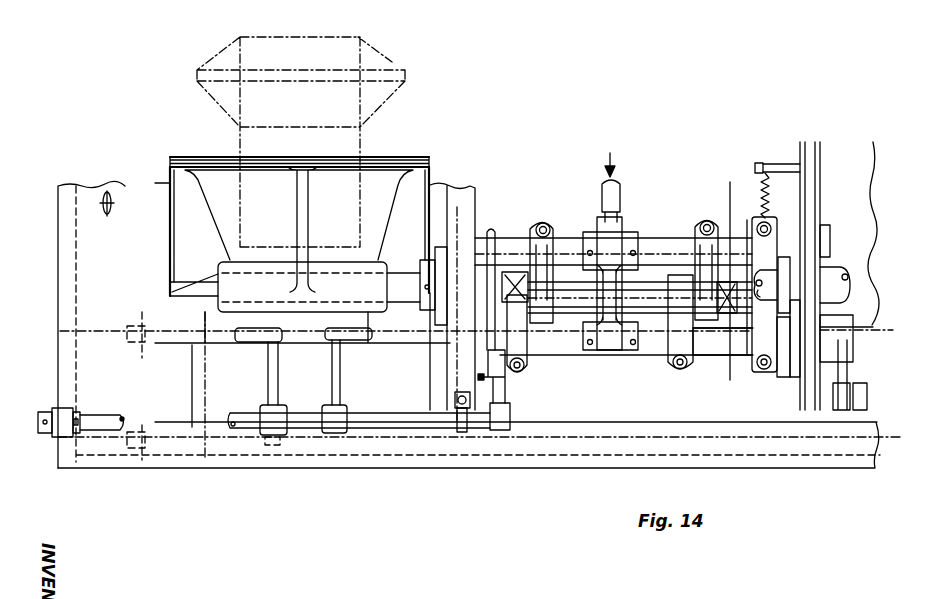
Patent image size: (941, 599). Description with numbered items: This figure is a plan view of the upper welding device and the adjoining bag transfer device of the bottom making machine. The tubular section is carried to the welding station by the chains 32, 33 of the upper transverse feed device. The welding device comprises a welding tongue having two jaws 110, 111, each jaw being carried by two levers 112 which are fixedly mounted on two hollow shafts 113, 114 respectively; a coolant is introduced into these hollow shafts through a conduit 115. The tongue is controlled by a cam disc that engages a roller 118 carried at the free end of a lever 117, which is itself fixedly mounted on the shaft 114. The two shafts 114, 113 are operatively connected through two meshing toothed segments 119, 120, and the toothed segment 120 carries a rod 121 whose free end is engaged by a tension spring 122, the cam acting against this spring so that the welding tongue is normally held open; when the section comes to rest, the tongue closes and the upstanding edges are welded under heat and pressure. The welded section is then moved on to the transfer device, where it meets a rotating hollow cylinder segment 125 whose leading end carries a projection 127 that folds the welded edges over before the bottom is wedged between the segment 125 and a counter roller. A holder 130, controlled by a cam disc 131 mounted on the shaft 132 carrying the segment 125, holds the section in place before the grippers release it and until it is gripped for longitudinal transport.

The chain 32 is at (135, 452).
The chain 33 is at (130, 326).
The jaw 110 is at (733, 267).
The jaw 111 is at (733, 314).
The lever 112 is at (548, 258).
The hollow shaft 113 is at (652, 243).
The hollow shaft 114 is at (712, 338).
The conduit 115 is at (618, 198).
The lever 117 is at (847, 372).
The roller 118 is at (858, 397).
The toothed segment 119 is at (772, 374).
The toothed segment 120 is at (766, 257).
The rod 121 is at (774, 226).
The tension spring 122 is at (770, 193).
The hollow cylinder segment 125 is at (420, 183).
The projection 127 is at (405, 162).
The holder 130 is at (322, 345).
The cam disc 131 is at (490, 228).
The shaft 132 is at (842, 283).